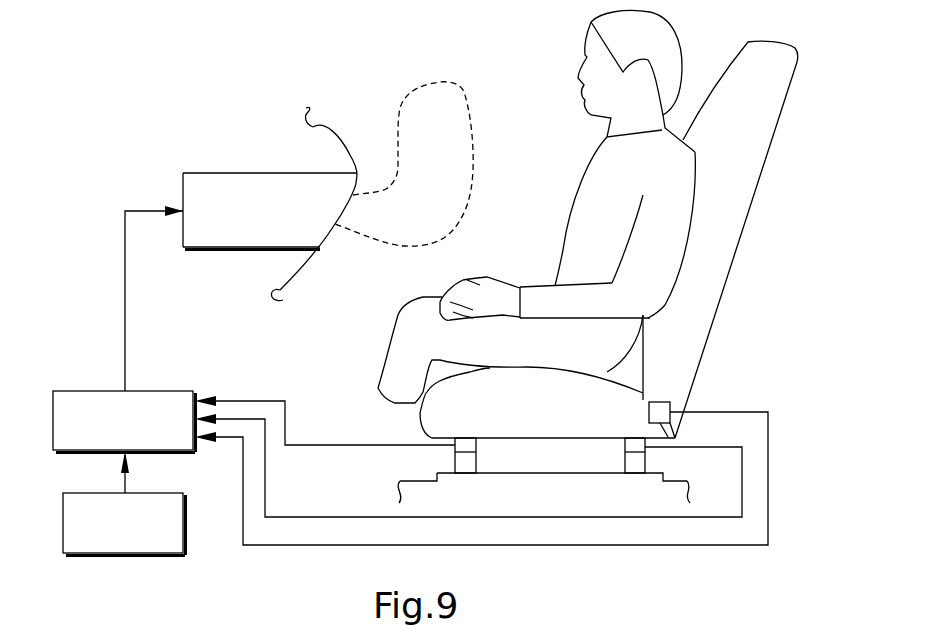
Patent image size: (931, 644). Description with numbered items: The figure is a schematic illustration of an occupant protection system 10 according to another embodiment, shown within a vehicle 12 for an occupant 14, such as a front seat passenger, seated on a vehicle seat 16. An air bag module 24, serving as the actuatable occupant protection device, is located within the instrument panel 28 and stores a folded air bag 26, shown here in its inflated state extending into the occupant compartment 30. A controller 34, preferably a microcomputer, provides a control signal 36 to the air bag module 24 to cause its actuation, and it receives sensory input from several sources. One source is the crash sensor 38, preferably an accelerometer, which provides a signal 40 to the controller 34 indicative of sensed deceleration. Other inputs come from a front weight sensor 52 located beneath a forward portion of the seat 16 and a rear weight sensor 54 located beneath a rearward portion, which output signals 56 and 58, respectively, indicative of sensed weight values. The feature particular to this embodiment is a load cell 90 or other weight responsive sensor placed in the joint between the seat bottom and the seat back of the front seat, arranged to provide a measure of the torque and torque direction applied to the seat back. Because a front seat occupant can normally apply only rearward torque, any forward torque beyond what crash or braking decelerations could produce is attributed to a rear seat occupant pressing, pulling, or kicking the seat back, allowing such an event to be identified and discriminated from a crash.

The occupant protection system 10 is at (118, 81).
The vehicle 12 is at (744, 321).
The occupant 14 is at (697, 152).
The vehicle seat 16 is at (733, 240).
The air bag module 24 is at (185, 178).
The air bag 26 is at (400, 98).
The instrument panel 28 is at (324, 126).
The occupant compartment 30 is at (539, 69).
The controller 34 is at (66, 390).
The control signal 36 is at (127, 317).
The crash sensor 38 is at (73, 495).
The crash sensor signal 40 is at (127, 490).
The front weight sensor 52 is at (463, 440).
The rear weight sensor 54 is at (633, 438).
The front weight sensor signal 56 is at (310, 445).
The rear weight sensor signal 58 is at (283, 517).
The load cell 90 is at (670, 402).